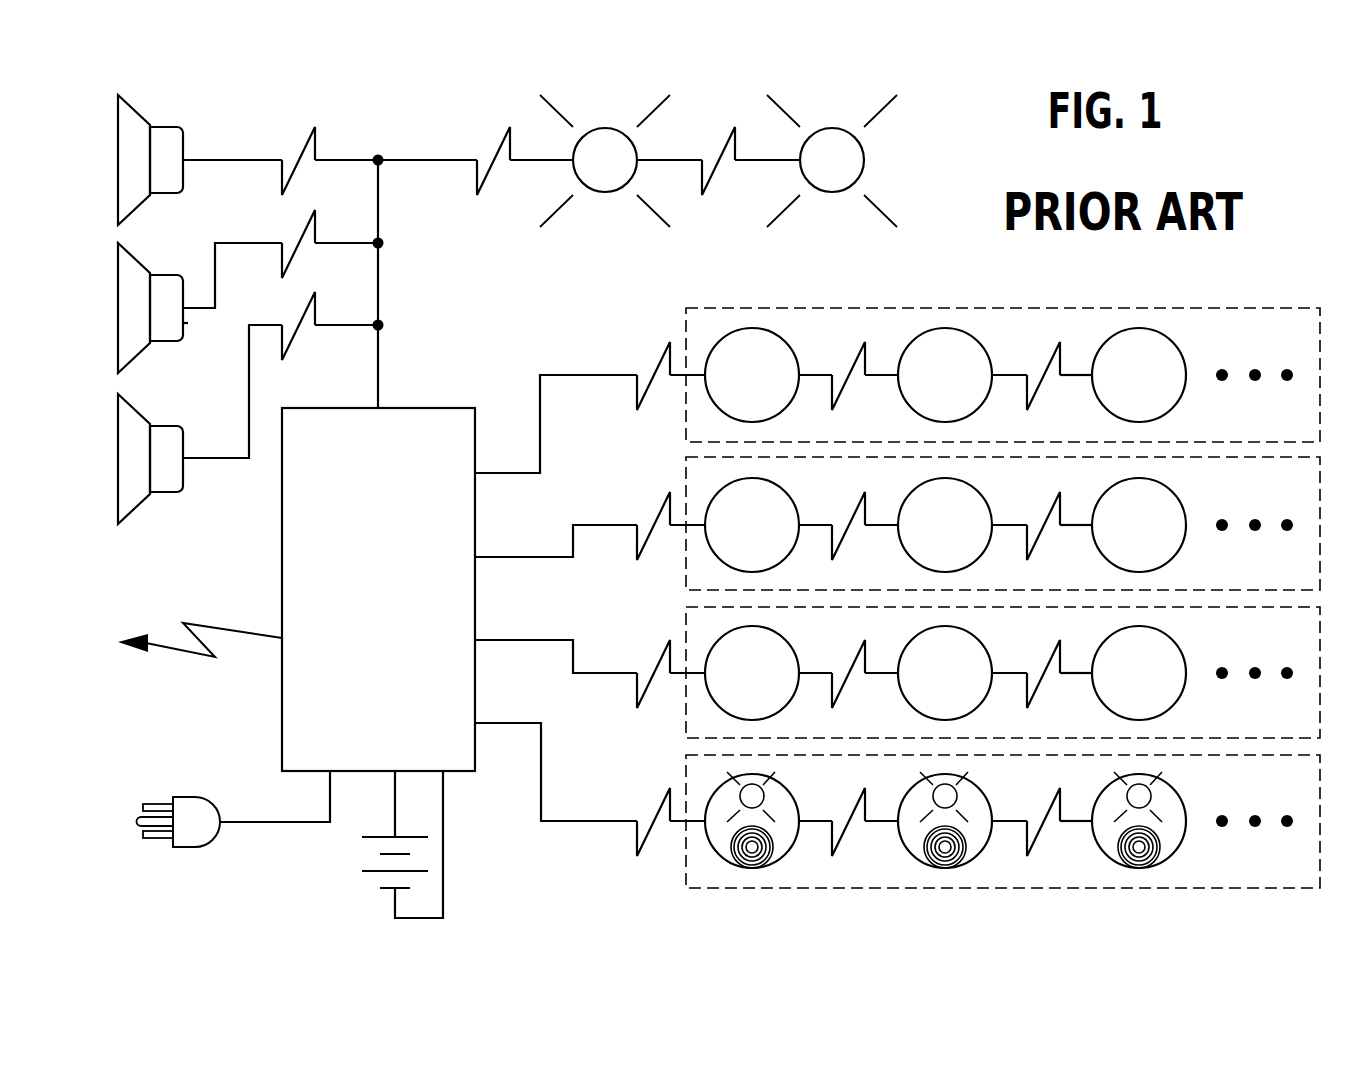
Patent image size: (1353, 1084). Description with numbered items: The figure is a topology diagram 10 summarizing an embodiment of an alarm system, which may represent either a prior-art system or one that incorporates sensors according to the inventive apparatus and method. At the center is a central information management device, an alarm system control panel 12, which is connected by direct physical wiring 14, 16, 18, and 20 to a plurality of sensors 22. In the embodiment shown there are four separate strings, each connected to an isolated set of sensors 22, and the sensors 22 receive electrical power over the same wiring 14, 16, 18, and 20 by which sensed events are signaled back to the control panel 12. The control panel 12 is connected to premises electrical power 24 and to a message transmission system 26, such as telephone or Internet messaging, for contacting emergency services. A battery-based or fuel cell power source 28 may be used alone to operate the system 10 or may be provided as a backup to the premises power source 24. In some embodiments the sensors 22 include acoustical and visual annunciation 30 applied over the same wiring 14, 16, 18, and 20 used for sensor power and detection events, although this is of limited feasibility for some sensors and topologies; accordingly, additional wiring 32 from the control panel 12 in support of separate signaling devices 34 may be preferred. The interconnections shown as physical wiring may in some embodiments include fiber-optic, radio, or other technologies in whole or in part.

The generalized diagram 10 is at (1236, 271).
The alarm system control panel 12 is at (366, 601).
The direct physical wiring 14 is at (605, 375).
The direct physical wiring 16 is at (605, 525).
The direct physical wiring 18 is at (623, 673).
The direct physical wiring 20 is at (605, 821).
The sensor 22 is at (738, 386).
The premises electrical power 24 is at (192, 798).
The message transmission system 26 is at (207, 624).
The battery-based or fuel cell power source 28 is at (367, 834).
The acoustical and visual annunciation 30 is at (740, 797).
The additional wiring 32 is at (380, 300).
The signaling device 34 is at (591, 171).